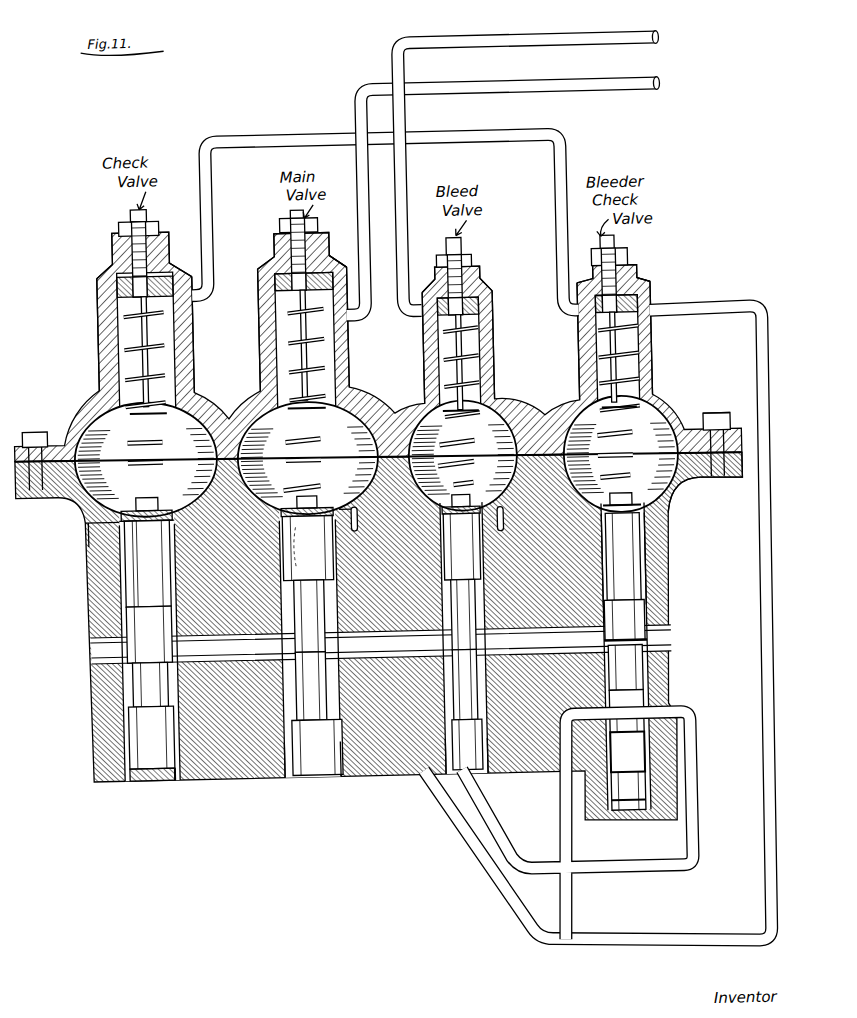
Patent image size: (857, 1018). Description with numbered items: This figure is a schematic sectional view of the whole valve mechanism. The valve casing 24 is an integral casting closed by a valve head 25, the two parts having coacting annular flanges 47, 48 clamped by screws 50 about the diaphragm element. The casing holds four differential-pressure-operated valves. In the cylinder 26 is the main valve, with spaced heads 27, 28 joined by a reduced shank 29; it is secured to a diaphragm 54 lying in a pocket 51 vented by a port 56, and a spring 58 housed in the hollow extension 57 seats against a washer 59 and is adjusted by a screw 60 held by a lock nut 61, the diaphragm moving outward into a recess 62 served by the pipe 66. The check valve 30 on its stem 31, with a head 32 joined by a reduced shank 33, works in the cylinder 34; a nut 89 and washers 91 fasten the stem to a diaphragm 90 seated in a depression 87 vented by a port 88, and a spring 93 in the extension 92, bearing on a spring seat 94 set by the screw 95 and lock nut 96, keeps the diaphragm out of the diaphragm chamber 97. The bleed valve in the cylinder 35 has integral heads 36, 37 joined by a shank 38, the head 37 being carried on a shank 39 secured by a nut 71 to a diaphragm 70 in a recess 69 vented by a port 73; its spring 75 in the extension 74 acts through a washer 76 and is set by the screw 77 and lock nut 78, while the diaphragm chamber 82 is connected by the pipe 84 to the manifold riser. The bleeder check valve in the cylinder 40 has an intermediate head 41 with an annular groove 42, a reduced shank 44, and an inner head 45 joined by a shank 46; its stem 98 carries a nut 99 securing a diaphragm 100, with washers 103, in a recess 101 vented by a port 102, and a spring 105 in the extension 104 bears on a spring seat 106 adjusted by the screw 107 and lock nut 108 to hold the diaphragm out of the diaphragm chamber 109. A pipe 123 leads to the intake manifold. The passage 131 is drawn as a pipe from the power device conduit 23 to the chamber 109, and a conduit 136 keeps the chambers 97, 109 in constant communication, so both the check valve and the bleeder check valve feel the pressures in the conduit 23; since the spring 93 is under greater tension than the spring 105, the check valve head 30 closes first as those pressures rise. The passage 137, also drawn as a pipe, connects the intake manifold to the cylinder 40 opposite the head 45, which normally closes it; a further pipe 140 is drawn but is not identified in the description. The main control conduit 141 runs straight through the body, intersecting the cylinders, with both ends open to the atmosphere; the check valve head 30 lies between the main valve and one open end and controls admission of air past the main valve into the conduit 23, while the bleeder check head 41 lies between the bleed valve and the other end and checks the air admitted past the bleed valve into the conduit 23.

The power device conduit 23 is at (310, 616).
The valve casing 24 is at (384, 778).
The valve head 25 is at (690, 410).
The cylinder 26 is at (310, 777).
The head 27 is at (317, 747).
The head 28 is at (295, 500).
The reduced shank 29 is at (311, 686).
The check valve 30 is at (140, 612).
The stem 31 is at (140, 562).
The head 32 is at (147, 777).
The reduced shank 33 is at (140, 680).
The cylinder 34 is at (170, 777).
The cylinder 35 is at (478, 774).
The head 36 is at (468, 744).
The head 37 is at (461, 614).
The reduced shank 38 is at (465, 684).
The shank 39 is at (462, 546).
The cylinder 40 is at (650, 560).
The intermediate head 41 is at (643, 612).
The annular groove 42 is at (648, 643).
The reduced shank 44 is at (642, 672).
The inner head 45 is at (642, 694).
The reduced shank 46 is at (627, 764).
The annular flange 47 is at (736, 488).
The annular flange 48 is at (733, 432).
The screws 50 is at (722, 420).
The pocket 51 is at (340, 470).
The diaphragm 54 is at (354, 500).
The port 56 is at (342, 504).
The hollow extension 57 is at (265, 262).
The spring 58 is at (325, 439).
The washer 59 is at (338, 256).
The screw 60 is at (298, 207).
The lock nut 61 is at (287, 223).
The recess 62 is at (266, 400).
The pipe 66 is at (376, 88).
The recess 69 is at (452, 462).
The diaphragm 70 is at (478, 478).
The nut 71 is at (466, 449).
The port 73 is at (500, 506).
The cylindrical extension 74 is at (498, 340).
The spring 75 is at (462, 376).
The washer 76 is at (496, 307).
The screw 77 is at (468, 244).
The lock nut 78 is at (478, 260).
The diaphragm chamber 82 is at (528, 404).
The pipe 84 is at (486, 38).
The depression 87 is at (100, 528).
The port 88 is at (88, 526).
The nut 89 is at (143, 492).
The diaphragm 90 is at (176, 508).
The washers 91 is at (158, 500).
The cylindrical extension 92 is at (198, 350).
The spring 93 is at (166, 437).
The spring seat 94 is at (176, 256).
The screw 95 is at (138, 208).
The lock nut 96 is at (126, 225).
The diaphragm chamber 97 is at (88, 402).
The stem 98 is at (642, 546).
The nut 99 is at (612, 462).
The diaphragm 100 is at (648, 460).
The recess 101 is at (682, 494).
The port 102 is at (642, 498).
The washers 103 is at (630, 480).
The cylindrical extension 104 is at (656, 356).
The spring 105 is at (603, 360).
The spring seat 106 is at (656, 291).
The screw 107 is at (621, 245).
The lock nut 108 is at (634, 262).
The diaphragm chamber 109 is at (664, 398).
The pipe 123 is at (307, 548).
The passage 131 is at (750, 308).
The conduit 136 is at (258, 131).
The passage 137 is at (620, 866).
The pipe 140 is at (556, 812).
The main control conduit 141 is at (83, 646).